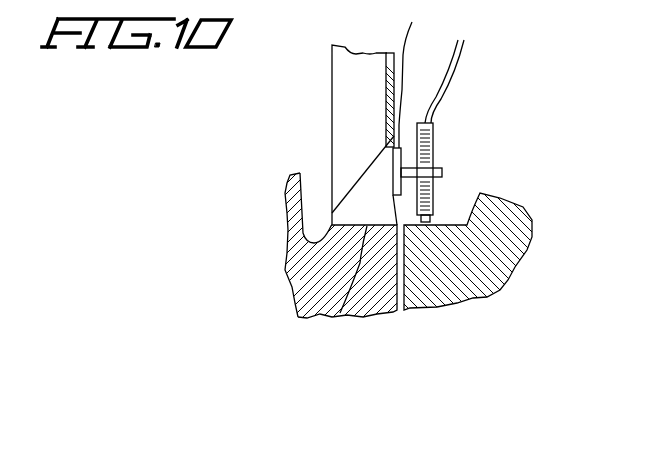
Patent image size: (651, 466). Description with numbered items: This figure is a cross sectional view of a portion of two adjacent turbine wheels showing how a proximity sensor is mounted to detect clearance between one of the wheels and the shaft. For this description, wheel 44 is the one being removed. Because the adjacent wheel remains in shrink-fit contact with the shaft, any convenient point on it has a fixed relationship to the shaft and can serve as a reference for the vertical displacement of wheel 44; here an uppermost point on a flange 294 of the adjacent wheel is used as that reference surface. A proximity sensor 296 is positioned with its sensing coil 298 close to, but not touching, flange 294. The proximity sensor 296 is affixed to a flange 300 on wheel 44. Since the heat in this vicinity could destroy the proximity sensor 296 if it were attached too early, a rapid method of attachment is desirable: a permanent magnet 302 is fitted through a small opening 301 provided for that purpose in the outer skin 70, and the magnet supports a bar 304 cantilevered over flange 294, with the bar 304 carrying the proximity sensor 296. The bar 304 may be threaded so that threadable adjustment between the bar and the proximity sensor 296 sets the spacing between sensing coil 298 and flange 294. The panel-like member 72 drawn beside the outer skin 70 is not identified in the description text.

The wheel 44 is at (288, 208).
The outer skin 70 is at (409, 113).
The panel 72 is at (358, 95).
The flange 294 is at (480, 296).
The proximity sensor 296 is at (434, 198).
The sensing coil 298 is at (425, 223).
The flange 300 is at (343, 317).
The small opening 301 is at (360, 178).
The permanent magnet 302 is at (370, 197).
The bar 304 is at (439, 180).